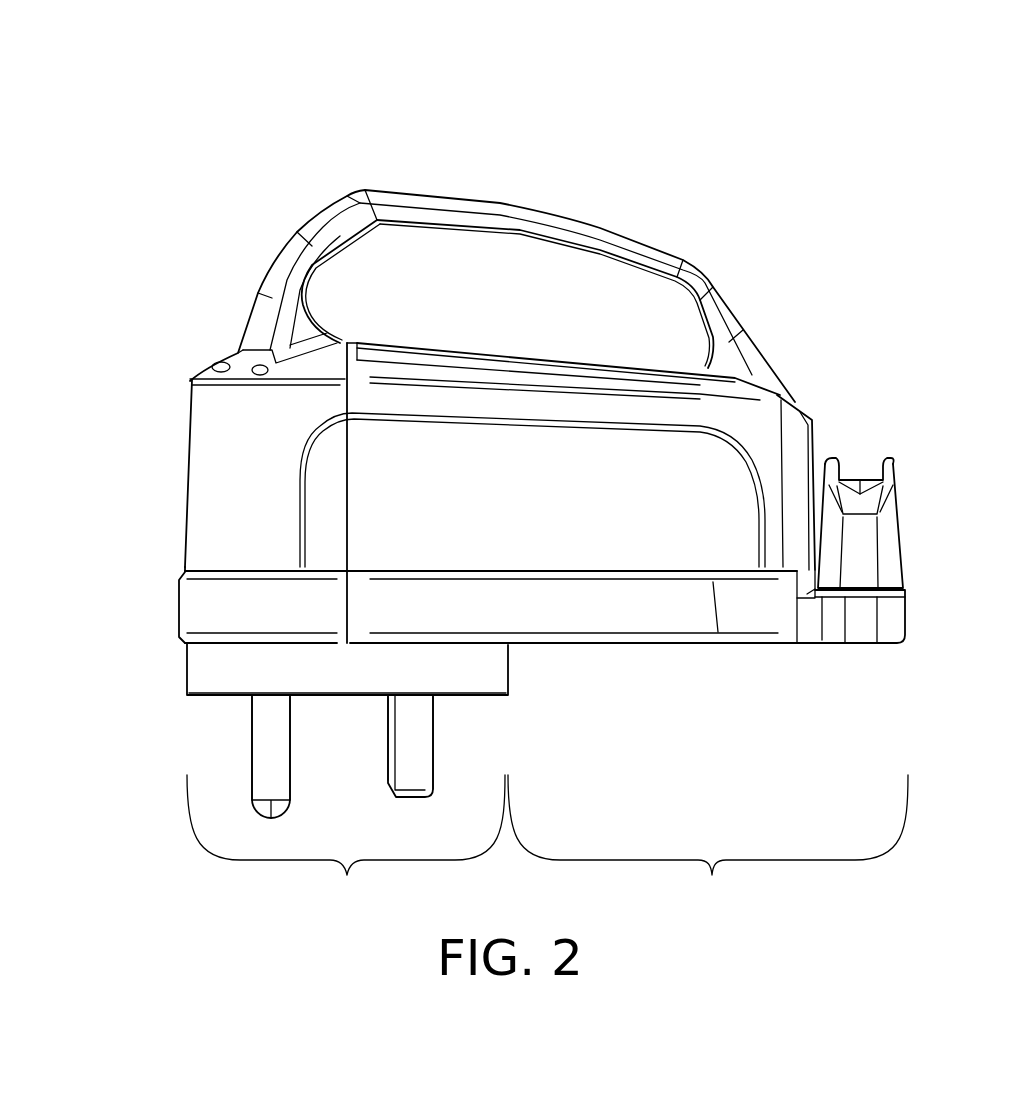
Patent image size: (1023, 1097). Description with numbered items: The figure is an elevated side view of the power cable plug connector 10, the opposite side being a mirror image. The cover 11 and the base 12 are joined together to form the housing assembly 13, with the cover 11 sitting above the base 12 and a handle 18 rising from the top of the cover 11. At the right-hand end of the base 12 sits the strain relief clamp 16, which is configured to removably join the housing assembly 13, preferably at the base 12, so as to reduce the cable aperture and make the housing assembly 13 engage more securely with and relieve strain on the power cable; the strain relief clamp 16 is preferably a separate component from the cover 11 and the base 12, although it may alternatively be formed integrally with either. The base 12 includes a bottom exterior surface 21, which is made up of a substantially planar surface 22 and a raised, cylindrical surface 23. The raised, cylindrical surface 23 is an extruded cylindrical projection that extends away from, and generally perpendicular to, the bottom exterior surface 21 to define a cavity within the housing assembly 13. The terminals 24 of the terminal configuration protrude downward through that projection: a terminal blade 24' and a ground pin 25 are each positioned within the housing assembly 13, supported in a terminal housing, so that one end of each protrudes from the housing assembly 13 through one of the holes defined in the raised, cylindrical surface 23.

The power cable plug connector 10 is at (526, 484).
The cover 11 is at (197, 416).
The base 12 is at (193, 605).
The housing assembly 13 is at (176, 559).
The strain relief clamp 16 is at (896, 505).
The handle 18 is at (706, 278).
The bottom exterior surface 21 is at (590, 646).
The substantially planar surface 22 is at (708, 845).
The raised, cylindrical surface 23 is at (346, 845).
The prongs 24 is at (275, 748).
The terminal blade 24' is at (376, 762).
The ground pin 25 is at (277, 747).